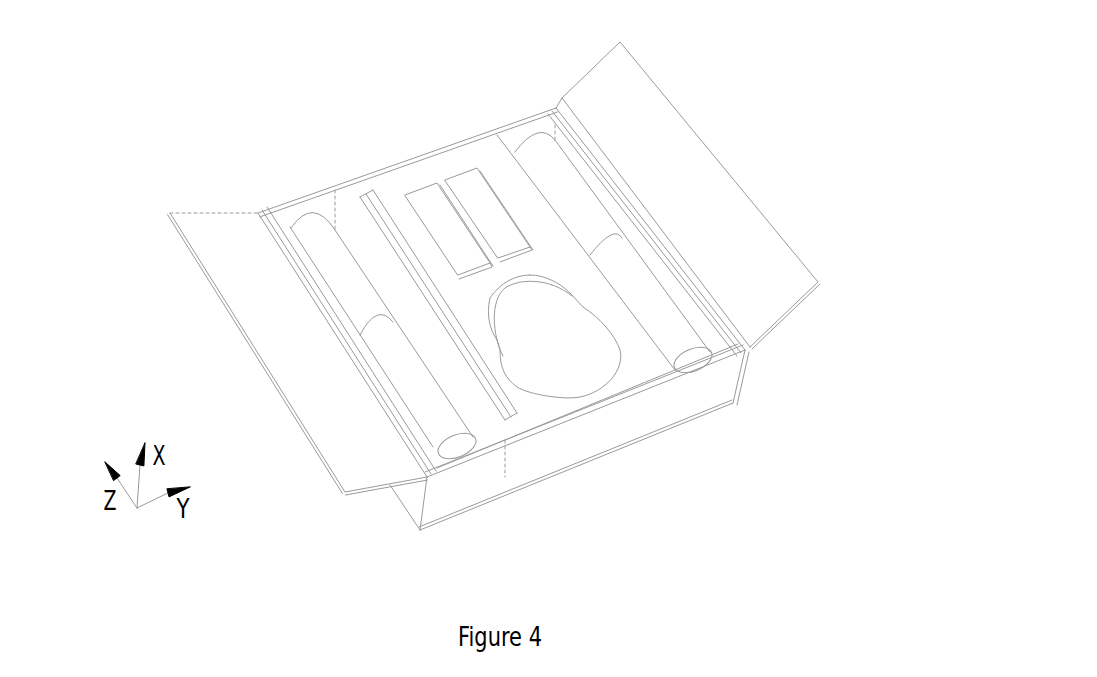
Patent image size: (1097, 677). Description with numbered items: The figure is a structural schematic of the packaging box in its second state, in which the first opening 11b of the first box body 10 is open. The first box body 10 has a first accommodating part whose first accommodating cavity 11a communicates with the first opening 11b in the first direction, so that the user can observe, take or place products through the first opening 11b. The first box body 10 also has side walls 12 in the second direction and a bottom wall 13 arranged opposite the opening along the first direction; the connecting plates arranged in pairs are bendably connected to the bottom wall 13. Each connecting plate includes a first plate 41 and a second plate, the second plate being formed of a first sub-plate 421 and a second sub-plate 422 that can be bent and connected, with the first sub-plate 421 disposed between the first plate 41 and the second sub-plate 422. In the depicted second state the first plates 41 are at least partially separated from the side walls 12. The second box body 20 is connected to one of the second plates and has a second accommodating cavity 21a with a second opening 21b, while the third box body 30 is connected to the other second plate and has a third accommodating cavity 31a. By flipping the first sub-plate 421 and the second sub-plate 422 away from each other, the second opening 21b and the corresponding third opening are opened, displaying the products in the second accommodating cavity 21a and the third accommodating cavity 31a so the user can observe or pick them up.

The first box body 10 is at (677, 463).
The side wall 12 is at (505, 480).
The bottom wall 13 is at (590, 463).
The second box body 20 is at (328, 517).
The third box body 30 is at (817, 348).
The first plate 41 is at (700, 417).
The first sub-plate 421 is at (747, 378).
The second sub-plate 422 is at (710, 148).
The first accommodating cavity 11a is at (388, 180).
The first opening 11b is at (443, 132).
The second accommodating cavity 21a is at (280, 212).
The second opening 21b is at (307, 175).
The third accommodating cavity 31a is at (505, 118).